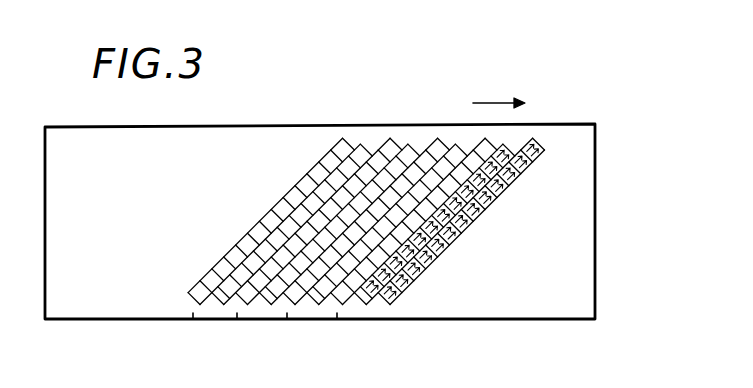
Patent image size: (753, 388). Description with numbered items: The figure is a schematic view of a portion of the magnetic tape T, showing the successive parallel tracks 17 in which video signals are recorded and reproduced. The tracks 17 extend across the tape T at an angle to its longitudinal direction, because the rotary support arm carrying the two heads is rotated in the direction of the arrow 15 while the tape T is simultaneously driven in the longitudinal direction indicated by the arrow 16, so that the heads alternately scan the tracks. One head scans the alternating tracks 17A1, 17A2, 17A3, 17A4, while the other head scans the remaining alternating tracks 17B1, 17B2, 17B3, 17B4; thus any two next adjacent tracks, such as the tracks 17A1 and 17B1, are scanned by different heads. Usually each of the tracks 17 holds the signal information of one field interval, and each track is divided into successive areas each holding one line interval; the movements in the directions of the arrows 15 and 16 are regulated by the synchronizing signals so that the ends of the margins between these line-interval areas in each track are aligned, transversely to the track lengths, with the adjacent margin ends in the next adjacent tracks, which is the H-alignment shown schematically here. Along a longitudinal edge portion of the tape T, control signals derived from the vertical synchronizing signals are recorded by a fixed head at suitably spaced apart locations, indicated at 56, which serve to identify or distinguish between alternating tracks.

The arrow 15 is at (257, 208).
The arrow 16 is at (497, 102).
The parallel tracks 17 is at (482, 245).
The track 17A1 is at (545, 141).
The track 17A2 is at (490, 138).
The track 17A3 is at (442, 144).
The track 17A4 is at (397, 138).
The track 17B1 is at (516, 142).
The track 17B2 is at (462, 144).
The track 17B3 is at (415, 144).
The track 17B4 is at (366, 142).
The control signal recording locations 56 is at (237, 318).
The magnetic tape T is at (572, 306).